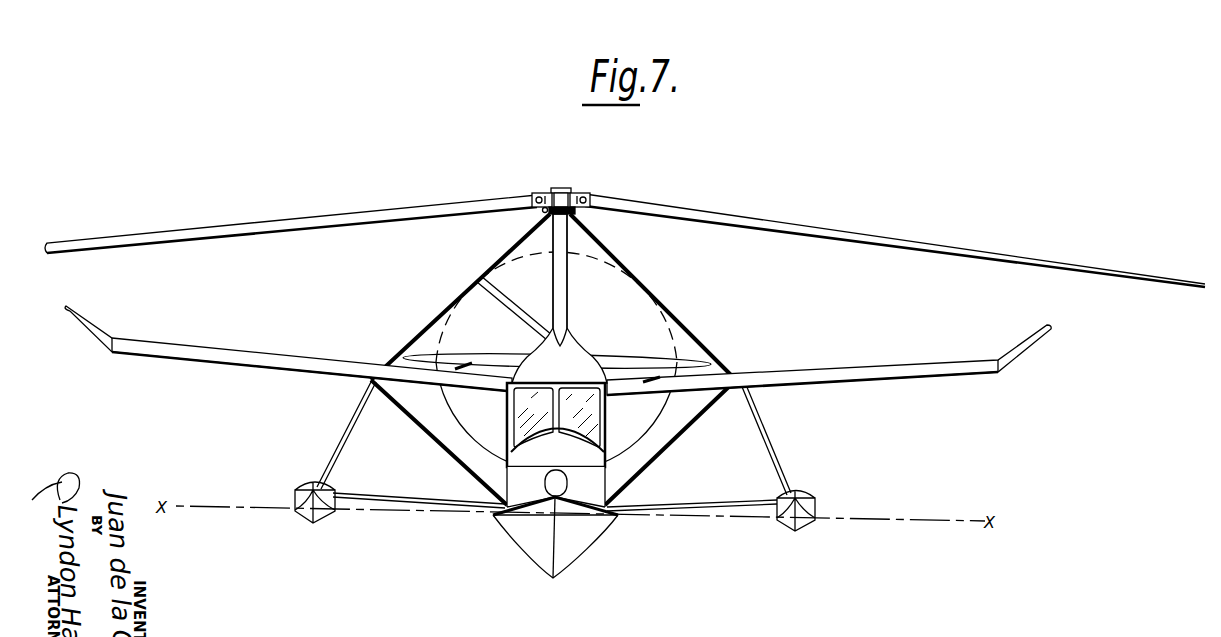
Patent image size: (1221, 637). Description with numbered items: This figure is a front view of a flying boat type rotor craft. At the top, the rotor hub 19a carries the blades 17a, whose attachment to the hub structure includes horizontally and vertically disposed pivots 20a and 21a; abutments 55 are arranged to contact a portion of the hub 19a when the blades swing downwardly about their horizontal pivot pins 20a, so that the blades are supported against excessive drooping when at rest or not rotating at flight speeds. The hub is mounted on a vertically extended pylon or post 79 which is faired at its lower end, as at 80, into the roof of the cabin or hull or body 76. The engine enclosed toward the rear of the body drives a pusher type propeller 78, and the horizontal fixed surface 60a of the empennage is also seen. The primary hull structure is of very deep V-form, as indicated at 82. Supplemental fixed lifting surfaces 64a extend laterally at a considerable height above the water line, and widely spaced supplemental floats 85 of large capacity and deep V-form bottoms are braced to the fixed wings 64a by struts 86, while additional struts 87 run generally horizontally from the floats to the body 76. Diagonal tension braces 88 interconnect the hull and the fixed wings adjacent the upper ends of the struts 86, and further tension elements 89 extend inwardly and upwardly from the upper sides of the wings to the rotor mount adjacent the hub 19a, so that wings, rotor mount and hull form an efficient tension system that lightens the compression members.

The blades 17a is at (299, 220).
The hub 19a is at (562, 189).
The horizontally disposed pivot 20a is at (550, 193).
The vertically disposed pivot 21a is at (538, 210).
The abutments 55 is at (576, 211).
The pylon or post 79 is at (567, 280).
The fairing 80 is at (556, 346).
The propeller 78 is at (504, 318).
The tension elements 89 is at (427, 330).
The diagonal tension braces 88 is at (418, 417).
The struts 86 is at (356, 417).
The additional struts 87 is at (403, 496).
The supplemental floats 85 is at (295, 493).
The horizontal fixed surface 60a is at (617, 360).
The supplemental fixed lifting surfaces 64a is at (275, 356).
The hull or body 76 is at (556, 425).
The deep V-form hull structure 82 is at (582, 540).